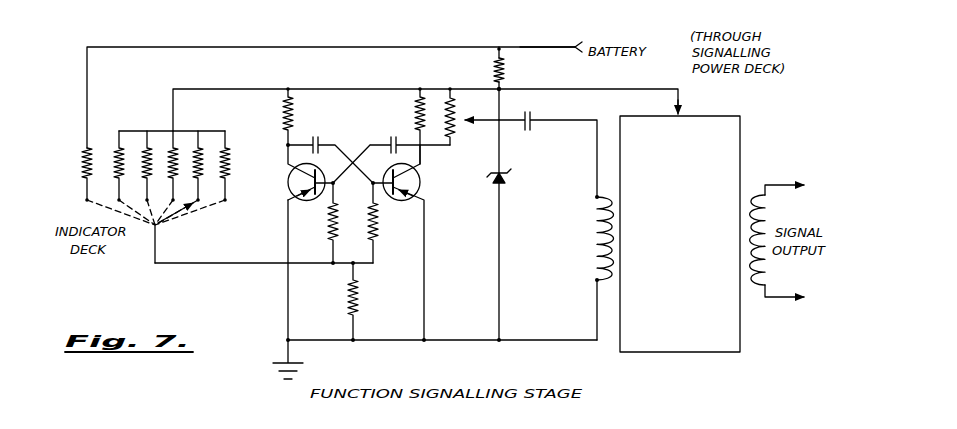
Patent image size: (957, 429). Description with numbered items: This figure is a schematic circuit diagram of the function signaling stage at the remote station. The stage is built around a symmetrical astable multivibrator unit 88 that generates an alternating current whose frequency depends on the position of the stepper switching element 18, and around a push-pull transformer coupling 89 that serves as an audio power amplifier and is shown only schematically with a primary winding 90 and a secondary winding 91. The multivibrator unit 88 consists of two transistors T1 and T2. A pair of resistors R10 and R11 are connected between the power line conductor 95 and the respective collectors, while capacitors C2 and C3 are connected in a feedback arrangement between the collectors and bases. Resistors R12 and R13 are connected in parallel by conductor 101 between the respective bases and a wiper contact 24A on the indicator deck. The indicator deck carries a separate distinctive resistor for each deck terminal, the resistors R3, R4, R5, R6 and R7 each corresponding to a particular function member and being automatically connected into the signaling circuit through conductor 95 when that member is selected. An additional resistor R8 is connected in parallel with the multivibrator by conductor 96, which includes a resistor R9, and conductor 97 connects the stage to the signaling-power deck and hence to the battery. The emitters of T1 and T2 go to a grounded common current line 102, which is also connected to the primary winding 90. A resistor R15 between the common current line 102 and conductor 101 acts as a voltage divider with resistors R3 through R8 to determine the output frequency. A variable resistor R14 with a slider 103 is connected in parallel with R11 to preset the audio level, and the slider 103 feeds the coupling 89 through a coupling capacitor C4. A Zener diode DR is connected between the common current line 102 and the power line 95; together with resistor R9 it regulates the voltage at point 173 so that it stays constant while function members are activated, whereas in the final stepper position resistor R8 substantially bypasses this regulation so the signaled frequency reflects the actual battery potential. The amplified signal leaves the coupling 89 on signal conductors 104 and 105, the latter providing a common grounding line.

The conductor 96 is at (273, 47).
The conductor 97 is at (533, 47).
The conductor 95 is at (268, 89).
The point 173 is at (496, 87).
The resistor R9 is at (506, 70).
The additional resistor R8 is at (80, 168).
The resistor R7 is at (113, 158).
The resistor R6 is at (150, 157).
The resistor R5 is at (180, 152).
The resistor R4 is at (202, 155).
The resistor R3 is at (230, 168).
The stepper switching element 18 is at (183, 213).
The wiper contact 24A is at (136, 250).
The conductor 101 is at (230, 264).
The resistor R10 is at (284, 112).
The capacitor C2 is at (318, 136).
The capacitor C3 is at (391, 136).
The resistor R11 is at (416, 112).
The variable resistor R14 is at (458, 108).
The slider 103 is at (462, 126).
The transistor T1 is at (285, 191).
The transistor T2 is at (426, 191).
The multivibrator unit 88 is at (280, 273).
The resistor R12 is at (330, 218).
The resistor R13 is at (378, 228).
The resistor R15 is at (360, 299).
The common current line 102 is at (388, 341).
The zener diode DR is at (505, 186).
The coupling capacitor C4 is at (533, 127).
The primary winding 90 is at (596, 229).
The push-pull transformer coupling 89 is at (707, 355).
The secondary winding 91 is at (767, 219).
The second signal conductor 105 is at (777, 185).
The signal conductor 104 is at (781, 298).